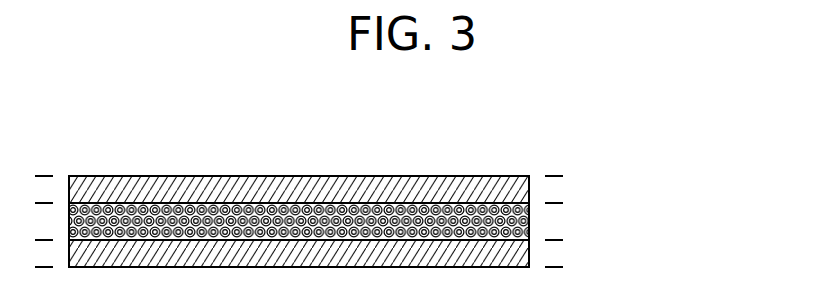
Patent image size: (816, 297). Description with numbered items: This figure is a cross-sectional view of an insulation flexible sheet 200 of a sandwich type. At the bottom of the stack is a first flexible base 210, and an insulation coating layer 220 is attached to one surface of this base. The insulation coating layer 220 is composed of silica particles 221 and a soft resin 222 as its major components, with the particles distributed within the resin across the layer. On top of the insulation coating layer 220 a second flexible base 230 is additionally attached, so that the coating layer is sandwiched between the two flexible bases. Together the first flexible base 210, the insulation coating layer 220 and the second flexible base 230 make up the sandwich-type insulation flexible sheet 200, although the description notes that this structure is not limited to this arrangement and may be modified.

The insulation flexible sheet 200 is at (427, 219).
The first flexible base 210 is at (510, 252).
The insulation coating layer 220 is at (394, 215).
The silica particles 221 is at (528, 220).
The soft resin 222 is at (528, 208).
The second flexible base 230 is at (510, 187).